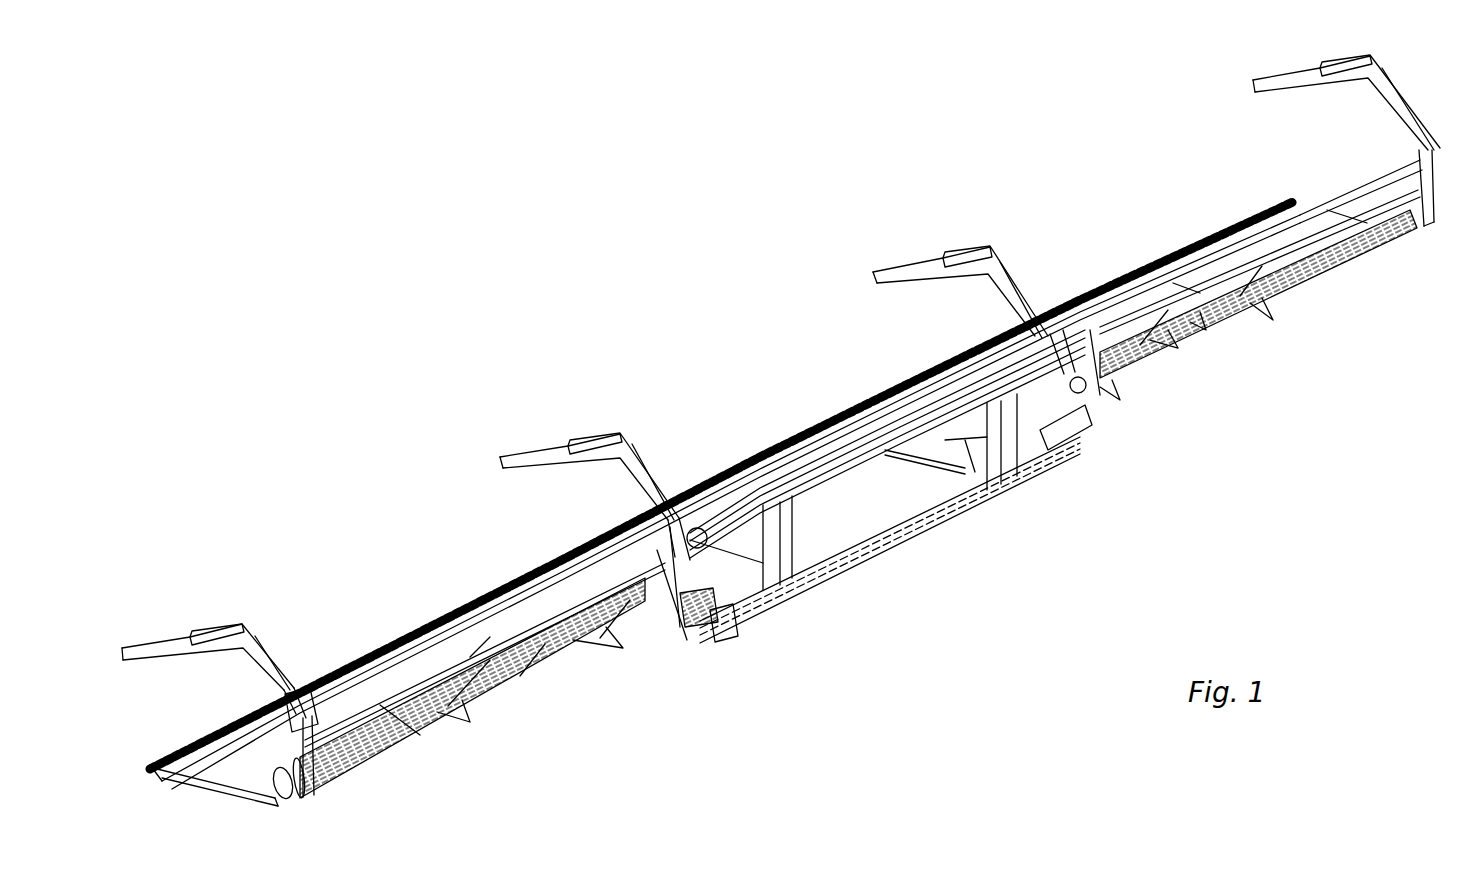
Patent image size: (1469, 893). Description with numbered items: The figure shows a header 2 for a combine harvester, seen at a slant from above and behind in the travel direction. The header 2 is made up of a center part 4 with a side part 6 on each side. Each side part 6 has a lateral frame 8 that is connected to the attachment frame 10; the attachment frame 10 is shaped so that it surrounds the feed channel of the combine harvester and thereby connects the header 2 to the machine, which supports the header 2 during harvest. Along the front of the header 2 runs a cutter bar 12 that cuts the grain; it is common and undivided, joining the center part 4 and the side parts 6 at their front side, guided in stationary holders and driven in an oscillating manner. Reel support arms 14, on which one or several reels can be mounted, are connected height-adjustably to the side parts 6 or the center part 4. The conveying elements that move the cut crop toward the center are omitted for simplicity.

The header 2 is at (781, 430).
The center part 4 is at (796, 417).
The side part 6 is at (1070, 165).
The lateral frame 8 is at (527, 672).
The attachment frame 10 is at (870, 450).
The cutter bar 12 is at (905, 385).
The reel support arm 14 is at (930, 268).